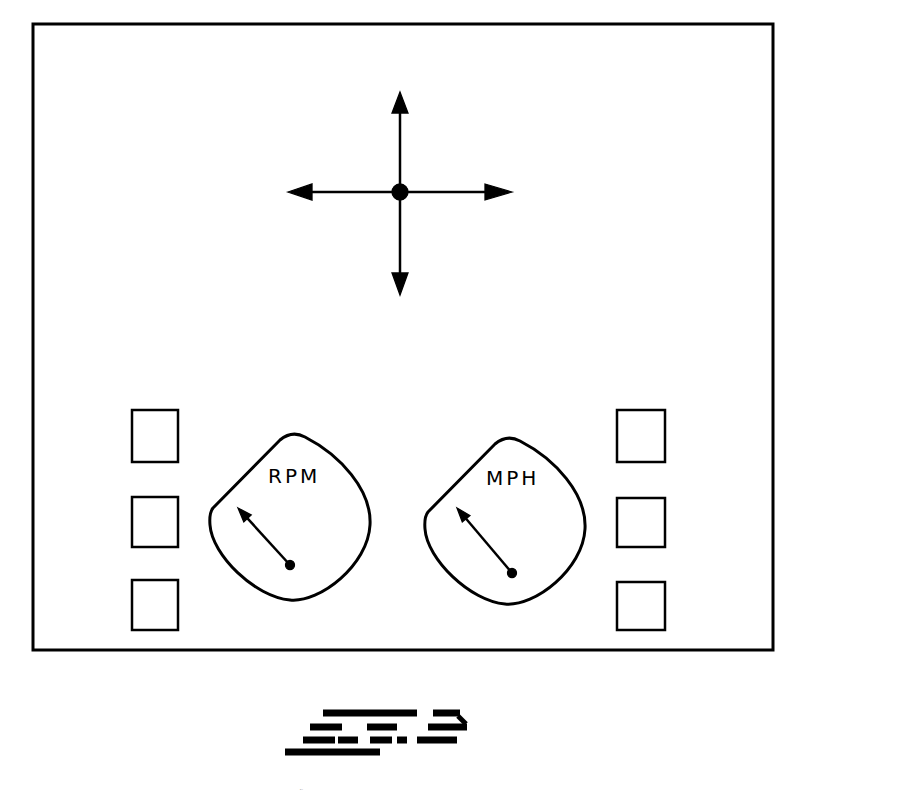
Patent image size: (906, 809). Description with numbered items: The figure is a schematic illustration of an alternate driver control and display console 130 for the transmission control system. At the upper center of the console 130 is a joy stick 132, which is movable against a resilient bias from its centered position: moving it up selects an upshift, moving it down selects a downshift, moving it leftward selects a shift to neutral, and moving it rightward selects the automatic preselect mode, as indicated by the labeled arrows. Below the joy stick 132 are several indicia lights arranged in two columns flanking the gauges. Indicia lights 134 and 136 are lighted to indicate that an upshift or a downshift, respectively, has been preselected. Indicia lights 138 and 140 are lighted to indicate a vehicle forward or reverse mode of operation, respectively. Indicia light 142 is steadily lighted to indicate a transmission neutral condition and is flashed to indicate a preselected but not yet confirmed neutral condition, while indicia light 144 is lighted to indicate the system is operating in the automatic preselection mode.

The driver control and display console 130 is at (787, 142).
The joy stick 132 is at (425, 176).
The indicia light 134 is at (132, 432).
The indicia light 136 is at (666, 441).
The indicia light 138 is at (132, 515).
The indicia light 140 is at (132, 600).
The indicia light 142 is at (666, 526).
The indicia light 144 is at (666, 610).